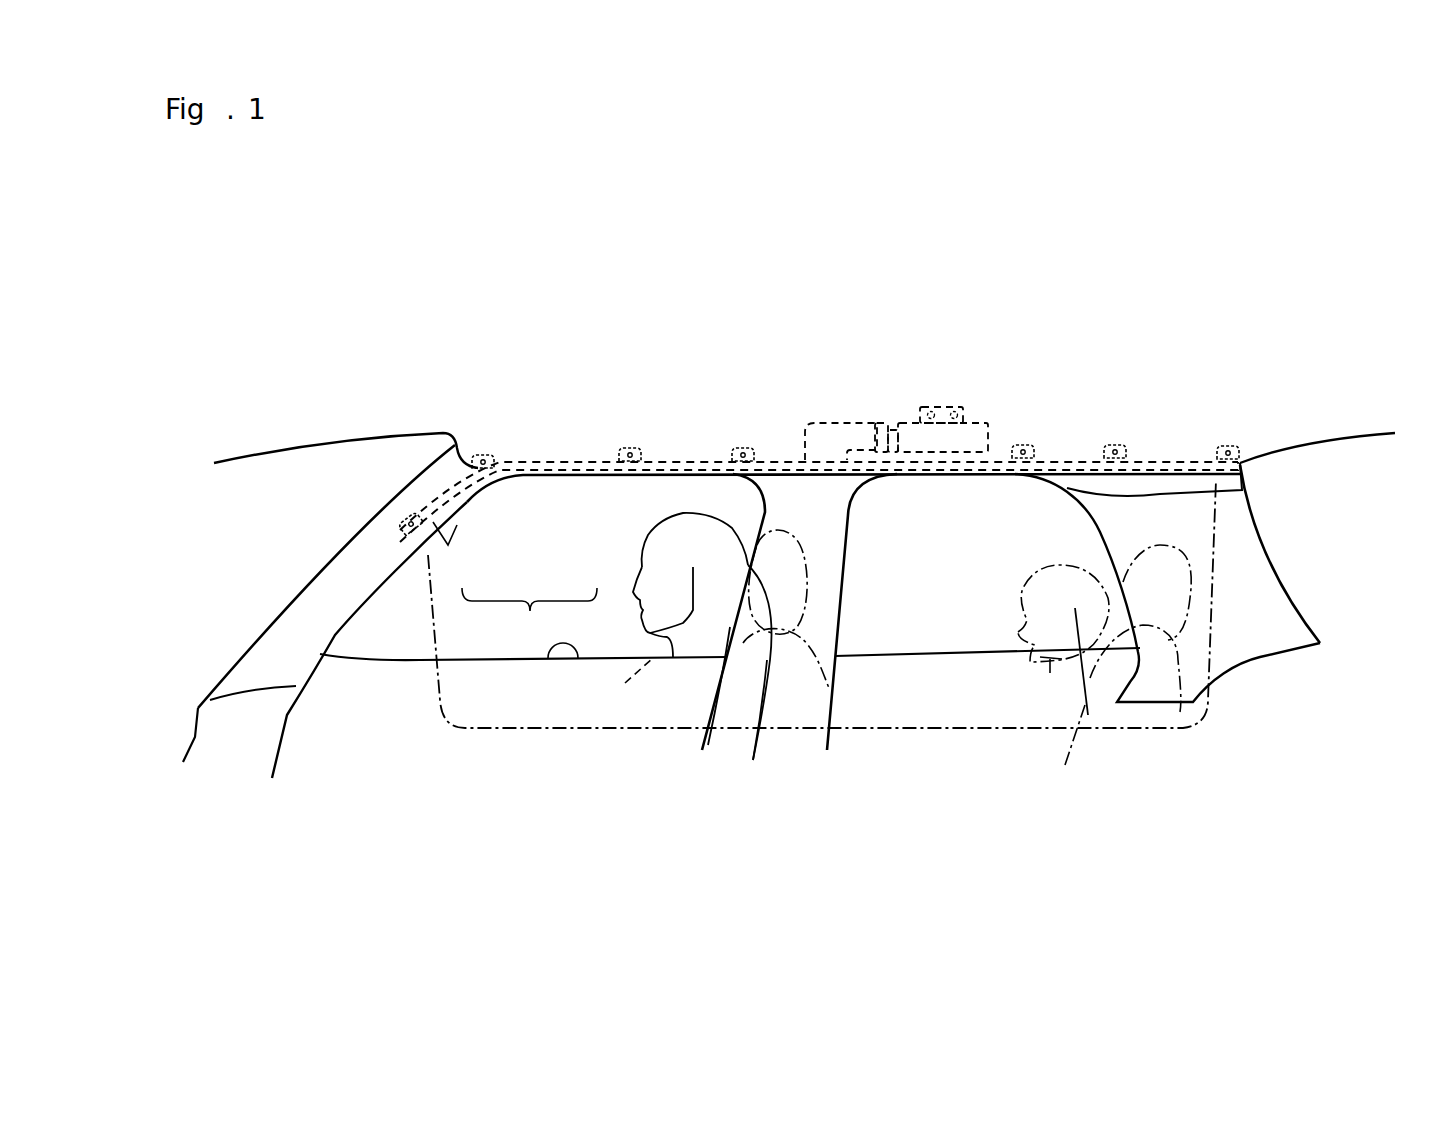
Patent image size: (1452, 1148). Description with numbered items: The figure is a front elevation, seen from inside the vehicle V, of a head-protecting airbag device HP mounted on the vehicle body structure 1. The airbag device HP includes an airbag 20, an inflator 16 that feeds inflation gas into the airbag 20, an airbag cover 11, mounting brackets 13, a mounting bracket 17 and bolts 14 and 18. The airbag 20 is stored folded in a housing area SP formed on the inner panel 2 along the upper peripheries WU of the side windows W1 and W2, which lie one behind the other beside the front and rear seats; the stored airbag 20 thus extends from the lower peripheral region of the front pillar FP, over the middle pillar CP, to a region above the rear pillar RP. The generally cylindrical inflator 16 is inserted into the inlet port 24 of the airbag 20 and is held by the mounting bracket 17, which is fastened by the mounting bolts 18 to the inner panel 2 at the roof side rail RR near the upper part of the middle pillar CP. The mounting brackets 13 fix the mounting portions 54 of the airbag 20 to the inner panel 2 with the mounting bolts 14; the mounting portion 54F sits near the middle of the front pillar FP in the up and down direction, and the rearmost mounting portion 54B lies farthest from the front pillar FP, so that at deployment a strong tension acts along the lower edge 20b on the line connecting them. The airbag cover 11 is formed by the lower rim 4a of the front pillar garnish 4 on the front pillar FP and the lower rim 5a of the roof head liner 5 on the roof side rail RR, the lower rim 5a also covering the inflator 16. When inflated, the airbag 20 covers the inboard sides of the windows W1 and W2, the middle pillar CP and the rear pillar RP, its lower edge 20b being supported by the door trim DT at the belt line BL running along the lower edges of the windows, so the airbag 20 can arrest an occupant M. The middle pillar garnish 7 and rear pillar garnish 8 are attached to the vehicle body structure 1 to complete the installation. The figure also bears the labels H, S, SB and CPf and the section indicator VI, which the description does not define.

The vehicle body structure 1 is at (819, 399).
The inner panel 2 is at (585, 430).
The front pillar garnish 4 is at (325, 592).
The lower rim of front pillar garnish 4a is at (450, 520).
The roof head liner 5 is at (550, 437).
The lower rim of roof head liner 5a is at (585, 478).
The middle pillar garnish 7 is at (818, 690).
The rear pillar garnish 8 is at (1247, 628).
The airbag cover 11 is at (529, 620).
The mounting brackets 13 is at (738, 450).
The mounting bolts 14 is at (750, 450).
The inflator 16 is at (982, 420).
The mounting bracket 17 is at (943, 440).
The mounting bolts 18 is at (957, 410).
The airbag 20 is at (1165, 455).
The lower edge of airbag 20b is at (928, 720).
The inlet port 24 is at (860, 435).
The mounting portions 54 is at (758, 453).
The mounting portion 54F is at (400, 522).
The rearmost mounting portion 54B is at (1245, 455).
The vehicle V is at (352, 338).
The head-protecting airbag device HP is at (450, 370).
The housing area SP is at (686, 445).
The upper peripheries of windows WU is at (660, 472).
The roof side rail RR is at (1080, 437).
The front pillar FP is at (265, 600).
The rear pillar RP is at (1280, 543).
The door trim DT is at (428, 687).
The belt line BL is at (548, 660).
The window W1 is at (392, 638).
The window W2 is at (981, 622).
The head of occupant H is at (693, 612).
The occupant M is at (605, 680).
The seat S is at (676, 757).
The seat back SB is at (748, 547).
The middle pillar CP is at (852, 615).
The front cushion portion CPf is at (748, 660).
The section line VI is at (793, 278).